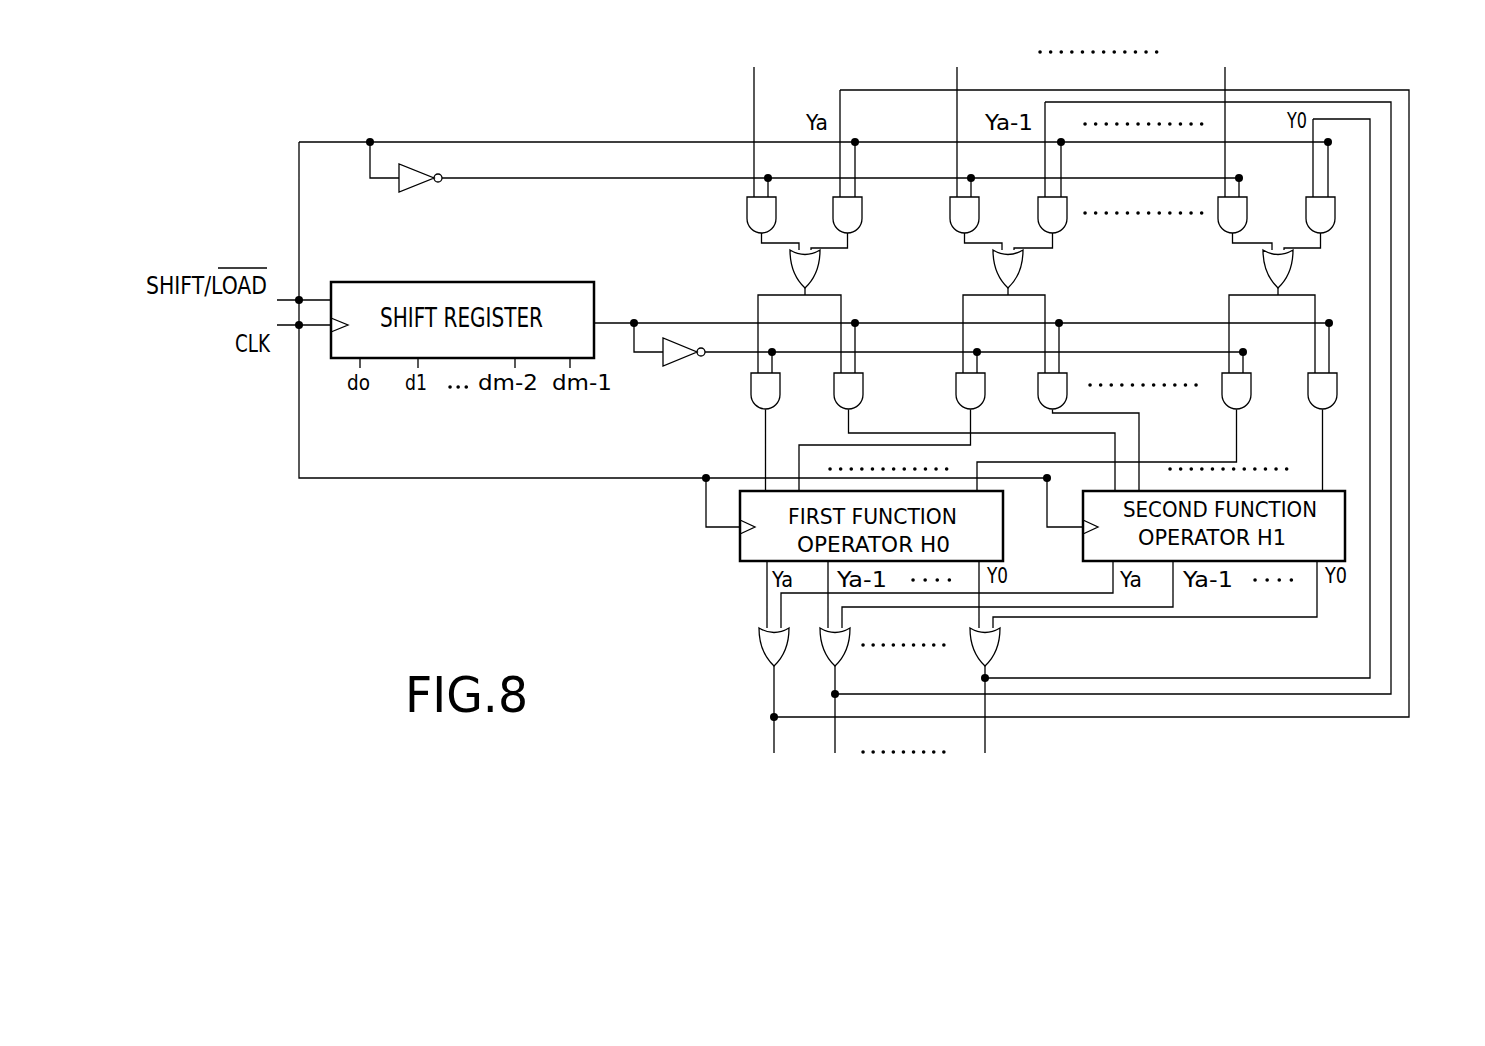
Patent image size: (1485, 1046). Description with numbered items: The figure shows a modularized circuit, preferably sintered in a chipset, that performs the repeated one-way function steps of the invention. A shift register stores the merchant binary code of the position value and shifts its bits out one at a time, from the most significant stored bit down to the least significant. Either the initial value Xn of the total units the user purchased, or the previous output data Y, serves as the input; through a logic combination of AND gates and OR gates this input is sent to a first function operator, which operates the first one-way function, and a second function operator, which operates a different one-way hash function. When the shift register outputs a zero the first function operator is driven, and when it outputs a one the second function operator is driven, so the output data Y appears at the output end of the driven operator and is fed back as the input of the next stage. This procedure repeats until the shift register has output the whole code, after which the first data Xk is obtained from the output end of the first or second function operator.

The initial value Xn is at (1260, 51).
The output data Y is at (1360, 572).
The first data Xk is at (989, 765).